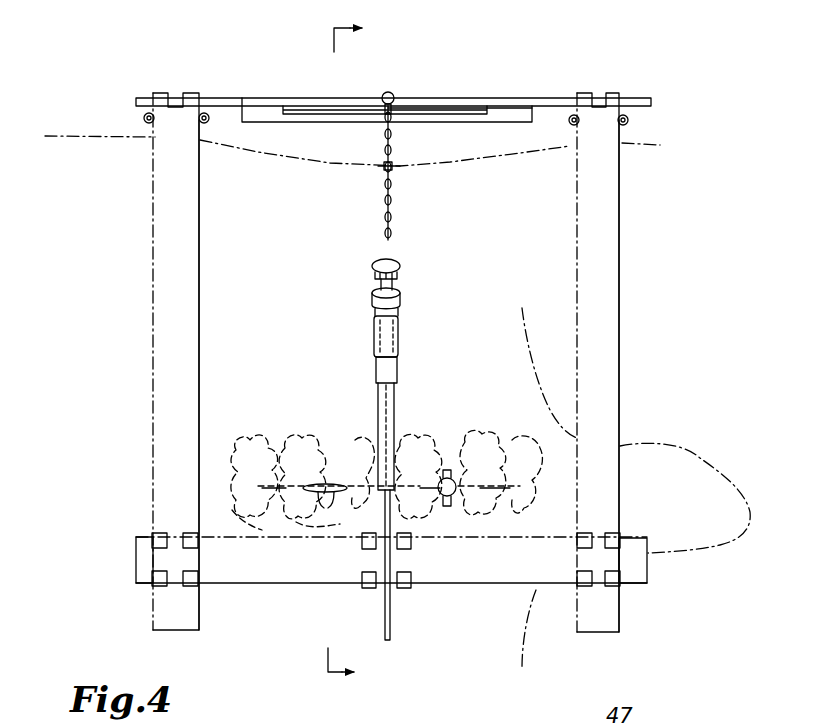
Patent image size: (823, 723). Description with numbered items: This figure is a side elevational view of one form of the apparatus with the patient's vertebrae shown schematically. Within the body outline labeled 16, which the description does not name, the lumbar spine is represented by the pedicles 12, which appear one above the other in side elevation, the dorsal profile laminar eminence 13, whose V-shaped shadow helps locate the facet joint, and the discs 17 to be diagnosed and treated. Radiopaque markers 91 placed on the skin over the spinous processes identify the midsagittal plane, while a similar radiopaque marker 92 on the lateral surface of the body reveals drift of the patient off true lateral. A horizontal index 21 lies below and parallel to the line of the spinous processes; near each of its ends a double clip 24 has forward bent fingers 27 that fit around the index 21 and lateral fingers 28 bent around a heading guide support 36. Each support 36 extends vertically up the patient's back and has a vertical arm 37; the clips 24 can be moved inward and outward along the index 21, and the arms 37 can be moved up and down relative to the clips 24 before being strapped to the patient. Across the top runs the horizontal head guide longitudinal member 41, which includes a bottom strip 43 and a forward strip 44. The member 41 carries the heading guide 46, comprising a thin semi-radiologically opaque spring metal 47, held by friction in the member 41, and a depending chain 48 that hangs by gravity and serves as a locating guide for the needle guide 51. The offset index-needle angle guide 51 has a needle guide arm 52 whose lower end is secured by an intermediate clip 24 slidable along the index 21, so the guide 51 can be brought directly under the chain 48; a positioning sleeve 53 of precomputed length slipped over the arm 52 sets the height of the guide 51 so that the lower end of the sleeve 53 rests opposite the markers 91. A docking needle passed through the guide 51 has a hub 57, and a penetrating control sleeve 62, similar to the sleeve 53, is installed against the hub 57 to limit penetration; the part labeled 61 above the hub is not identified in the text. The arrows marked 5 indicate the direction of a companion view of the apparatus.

The section line of FIG. 5 is at (353, 348).
The pedicles 12 is at (281, 470).
The dorsal profile laminar eminence 13 is at (322, 470).
The patient body 16 is at (524, 370).
The disc 17 is at (342, 462).
The horizontal index 21 is at (236, 584).
The double clip 24 is at (135, 118).
The forward bent fingers 27 is at (398, 578).
The lateral fingers 28 is at (206, 124).
The heading guide support 36 is at (148, 282).
The vertical arm 37 is at (166, 242).
The head guide longitudinal member 41 is at (289, 94).
The bottom strip 43 is at (470, 122).
The forward strip 44 is at (460, 100).
The heading guide 46 is at (383, 94).
The spring metal 47 is at (391, 102).
The chain 48 is at (392, 200).
The offset index-needle angle guide 51 is at (383, 326).
The needle guide arm 52 is at (392, 612).
The positioning sleeve 53 is at (395, 410).
The hub 57 is at (372, 300).
The handle cap 61 is at (400, 268).
The penetrating control sleeve 62 is at (399, 336).
The radiopaque markers 91 is at (452, 470).
The radiopaque marker 92 is at (396, 164).